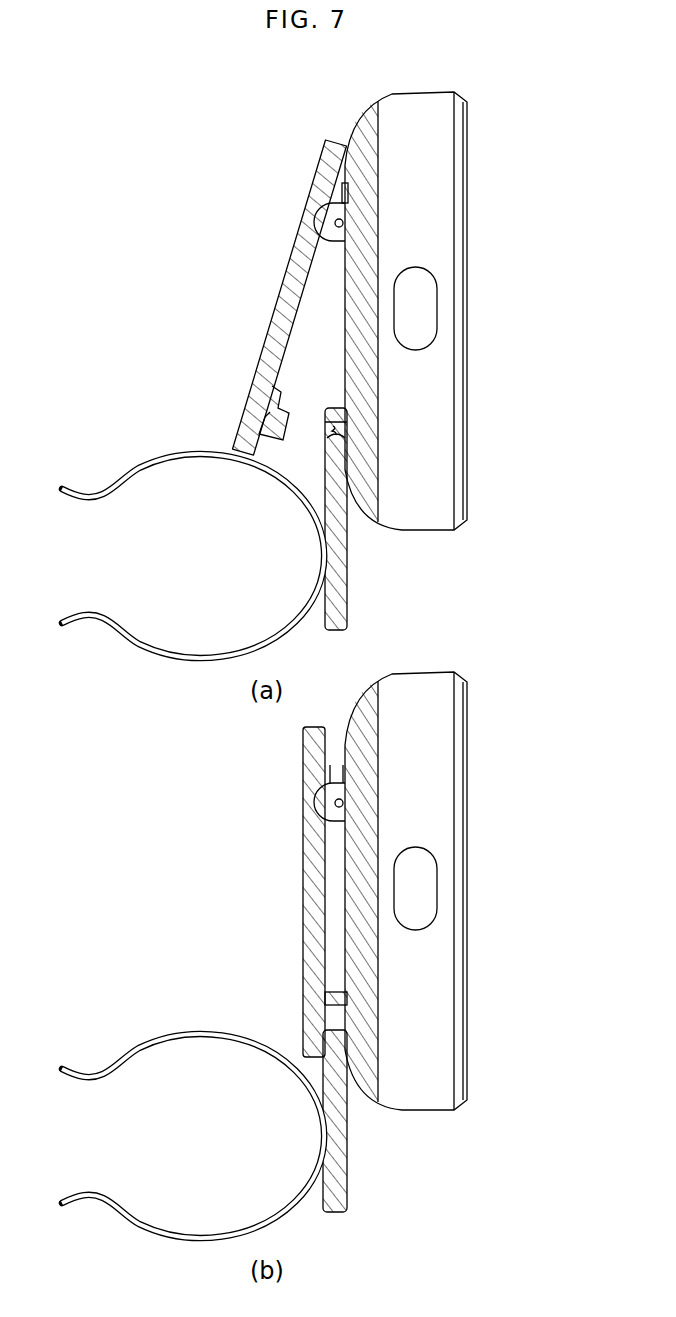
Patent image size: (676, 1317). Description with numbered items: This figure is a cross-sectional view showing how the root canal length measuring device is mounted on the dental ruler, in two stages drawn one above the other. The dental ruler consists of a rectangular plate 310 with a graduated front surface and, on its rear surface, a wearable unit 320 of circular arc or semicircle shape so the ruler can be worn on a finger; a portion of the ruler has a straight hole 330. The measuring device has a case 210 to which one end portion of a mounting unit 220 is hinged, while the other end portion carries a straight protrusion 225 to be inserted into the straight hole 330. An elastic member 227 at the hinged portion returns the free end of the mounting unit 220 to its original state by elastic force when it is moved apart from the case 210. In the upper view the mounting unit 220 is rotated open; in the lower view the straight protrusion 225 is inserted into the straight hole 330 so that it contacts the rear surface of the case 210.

The case 210 is at (443, 172).
The mounting unit 220 is at (283, 272).
The straight protrusion 225 is at (273, 388).
The elastic member 227 is at (333, 183).
The rectangular plate 310 is at (340, 590).
The wearable unit 320 is at (157, 462).
The straight hole 330 is at (350, 433).